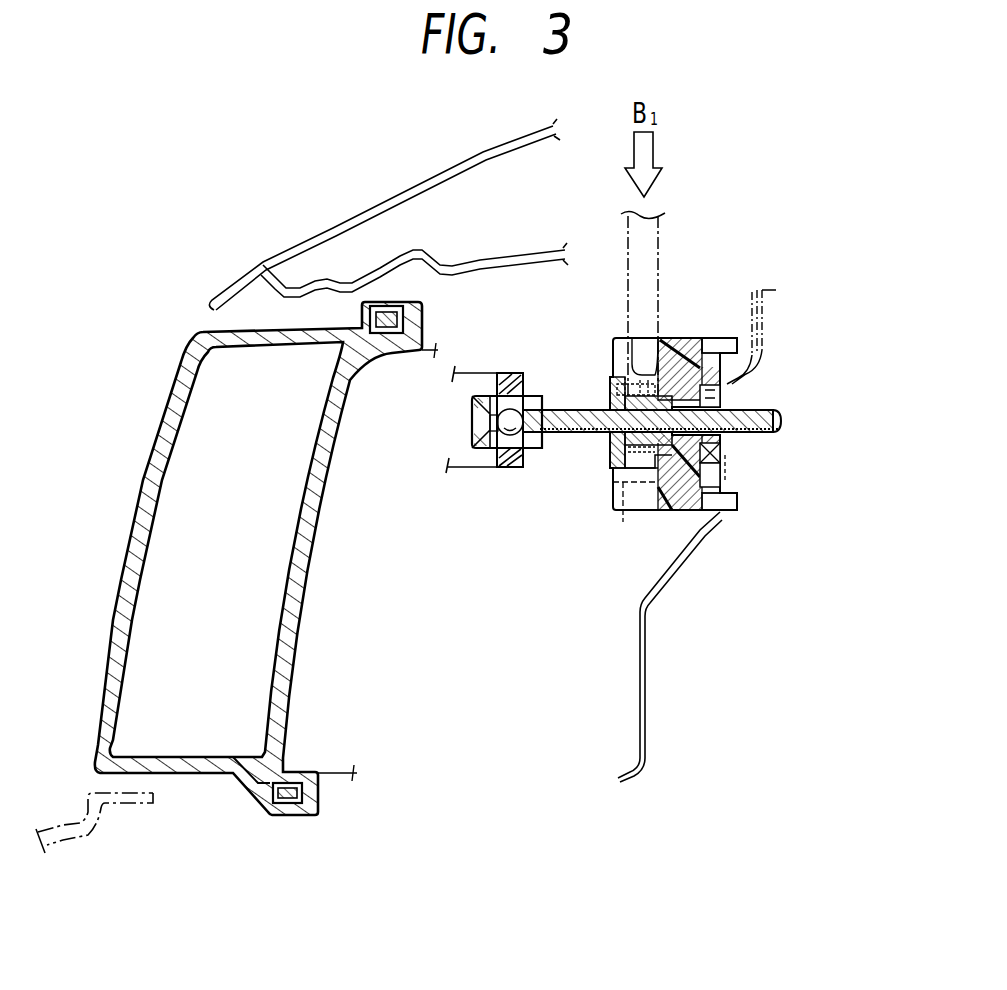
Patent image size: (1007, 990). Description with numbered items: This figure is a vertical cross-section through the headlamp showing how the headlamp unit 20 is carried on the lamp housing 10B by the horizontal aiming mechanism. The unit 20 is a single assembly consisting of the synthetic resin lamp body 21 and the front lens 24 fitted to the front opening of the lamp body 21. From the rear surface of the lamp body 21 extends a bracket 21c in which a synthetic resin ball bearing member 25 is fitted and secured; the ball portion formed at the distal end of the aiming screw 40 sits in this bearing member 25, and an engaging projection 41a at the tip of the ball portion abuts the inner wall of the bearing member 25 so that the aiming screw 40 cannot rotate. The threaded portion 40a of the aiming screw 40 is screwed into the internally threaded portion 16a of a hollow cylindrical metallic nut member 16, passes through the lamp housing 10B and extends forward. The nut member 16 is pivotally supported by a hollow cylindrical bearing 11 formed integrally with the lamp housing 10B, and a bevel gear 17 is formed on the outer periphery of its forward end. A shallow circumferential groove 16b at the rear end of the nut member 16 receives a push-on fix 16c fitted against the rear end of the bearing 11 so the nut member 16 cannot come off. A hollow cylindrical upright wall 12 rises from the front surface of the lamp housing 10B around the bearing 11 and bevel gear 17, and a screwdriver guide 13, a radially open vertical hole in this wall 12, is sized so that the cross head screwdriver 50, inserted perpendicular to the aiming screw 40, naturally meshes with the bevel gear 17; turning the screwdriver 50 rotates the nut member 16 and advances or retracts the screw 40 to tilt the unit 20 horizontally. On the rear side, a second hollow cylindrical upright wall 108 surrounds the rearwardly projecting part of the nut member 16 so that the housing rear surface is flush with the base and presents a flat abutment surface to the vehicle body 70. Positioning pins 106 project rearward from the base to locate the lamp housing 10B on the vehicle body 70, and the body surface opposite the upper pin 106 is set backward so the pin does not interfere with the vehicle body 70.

The headlamp unit 20 is at (160, 396).
The front lens 24 is at (128, 516).
The lamp body 21 is at (303, 592).
The bracket 21c is at (458, 466).
The engaging projection 41a is at (490, 387).
The ball bearing member 25 is at (534, 450).
The aiming screw 40 is at (572, 432).
The threaded portion 40a is at (760, 412).
The cross head screwdriver 50 is at (657, 268).
The bearing 11 is at (677, 338).
The lamp housing 10B is at (704, 334).
The positioning pin 106 is at (742, 349).
The nut member 16 is at (706, 519).
The internally threaded portion 16a is at (606, 417).
The groove 16b is at (714, 454).
The push-on fix 16c is at (723, 483).
The upright wall 108 is at (724, 473).
The bevel gear 17 is at (610, 470).
The upright wall 12 is at (622, 490).
The screwdriver guide 13 is at (654, 508).
The vehicle body 70 is at (698, 547).